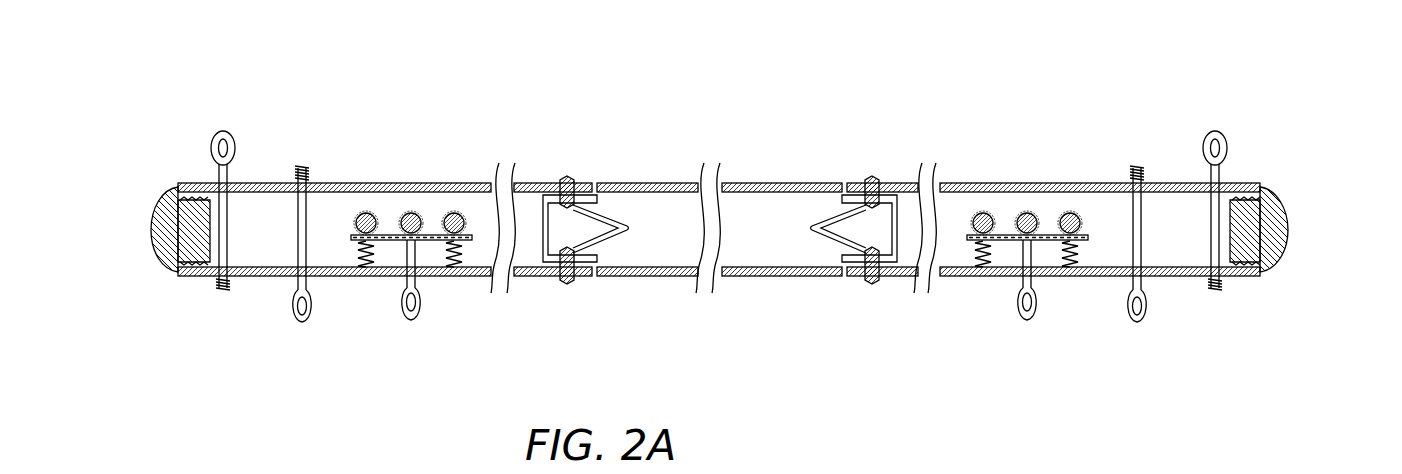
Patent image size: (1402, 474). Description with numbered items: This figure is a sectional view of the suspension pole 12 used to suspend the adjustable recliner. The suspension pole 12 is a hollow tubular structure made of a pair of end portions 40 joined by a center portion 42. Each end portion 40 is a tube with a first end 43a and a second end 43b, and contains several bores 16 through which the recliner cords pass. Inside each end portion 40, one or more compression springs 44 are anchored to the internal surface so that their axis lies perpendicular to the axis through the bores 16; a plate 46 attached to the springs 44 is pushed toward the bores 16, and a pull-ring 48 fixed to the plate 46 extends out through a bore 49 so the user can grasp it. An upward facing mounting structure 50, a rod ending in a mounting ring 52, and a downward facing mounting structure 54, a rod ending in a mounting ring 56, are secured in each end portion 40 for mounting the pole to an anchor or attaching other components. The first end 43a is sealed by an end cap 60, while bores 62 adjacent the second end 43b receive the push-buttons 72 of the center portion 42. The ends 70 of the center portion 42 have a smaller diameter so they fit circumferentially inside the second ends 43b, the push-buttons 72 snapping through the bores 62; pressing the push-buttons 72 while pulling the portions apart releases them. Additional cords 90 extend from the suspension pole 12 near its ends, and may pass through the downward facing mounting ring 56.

The suspension pole 12 is at (882, 182).
The bores 16 is at (366, 212).
The end portion 40 is at (698, 231).
The center portion 42 is at (657, 146).
The first end 43a is at (185, 190).
The second end 43b is at (587, 266).
The compression springs 44 is at (300, 247).
The plate 46 is at (395, 236).
The pull-ring 48 is at (416, 308).
The bore 49 is at (430, 283).
The upward facing mounting structure 50 is at (208, 184).
The mounting ring 52 is at (223, 132).
The downward facing mounting structure 54 is at (222, 250).
The mounting ring 56 is at (302, 322).
The end cap 60 is at (165, 228).
The bores 62 is at (590, 184).
The ends 70 is at (552, 260).
The push-buttons 72 is at (565, 178).
The cords 90 is at (848, 190).